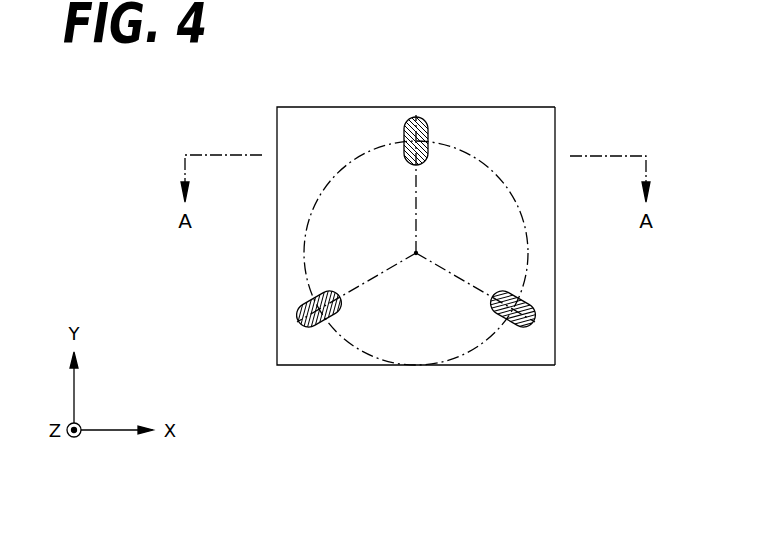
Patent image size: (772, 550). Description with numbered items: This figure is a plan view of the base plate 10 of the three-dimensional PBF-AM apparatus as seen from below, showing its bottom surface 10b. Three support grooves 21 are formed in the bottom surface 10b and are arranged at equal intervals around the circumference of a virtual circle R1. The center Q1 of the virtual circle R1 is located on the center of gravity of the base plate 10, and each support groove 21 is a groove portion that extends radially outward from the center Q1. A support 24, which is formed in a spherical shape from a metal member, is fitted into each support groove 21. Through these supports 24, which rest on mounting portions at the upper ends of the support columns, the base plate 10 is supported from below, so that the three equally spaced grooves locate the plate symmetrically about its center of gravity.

The base plate 10 is at (556, 255).
The bottom surface 10b is at (543, 297).
The support groove 21 is at (382, 209).
The support 24 is at (318, 328).
The virtual circle R1 is at (497, 178).
The center Q1 is at (417, 253).